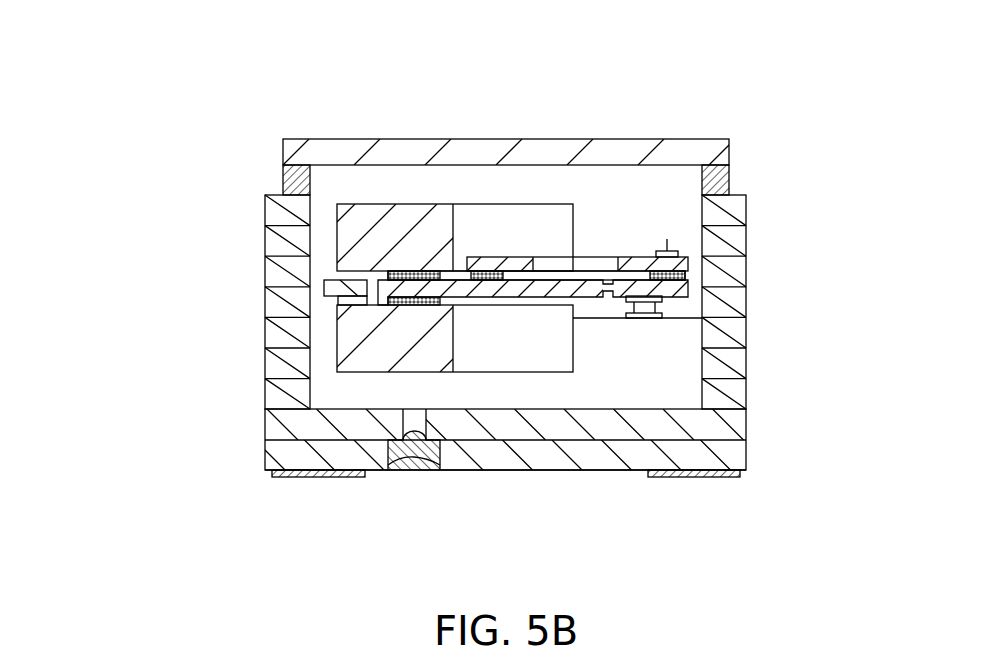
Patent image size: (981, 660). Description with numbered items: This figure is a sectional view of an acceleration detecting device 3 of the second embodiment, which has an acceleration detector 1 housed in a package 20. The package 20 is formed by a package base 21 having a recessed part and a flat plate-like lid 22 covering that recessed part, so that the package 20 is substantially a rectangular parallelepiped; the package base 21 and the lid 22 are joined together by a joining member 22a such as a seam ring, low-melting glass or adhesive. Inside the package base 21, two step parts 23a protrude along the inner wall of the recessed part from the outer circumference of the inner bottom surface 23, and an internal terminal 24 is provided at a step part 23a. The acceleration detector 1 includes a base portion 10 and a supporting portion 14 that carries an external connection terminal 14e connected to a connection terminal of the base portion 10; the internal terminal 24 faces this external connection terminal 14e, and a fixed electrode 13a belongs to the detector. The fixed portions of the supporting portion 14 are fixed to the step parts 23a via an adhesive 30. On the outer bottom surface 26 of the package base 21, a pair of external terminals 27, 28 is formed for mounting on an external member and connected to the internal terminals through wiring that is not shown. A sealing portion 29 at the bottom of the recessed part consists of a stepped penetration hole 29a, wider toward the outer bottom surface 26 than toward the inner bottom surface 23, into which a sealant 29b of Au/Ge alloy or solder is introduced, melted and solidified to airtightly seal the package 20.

The acceleration detecting device 3 is at (693, 118).
The acceleration detector 1 is at (528, 202).
The fixed electrode 13a is at (603, 256).
The base portion 10 is at (682, 285).
The supporting portion 14 is at (324, 287).
The adhesive 30 is at (338, 300).
The step part 23a is at (660, 300).
The external connection terminal 14e is at (664, 316).
The internal terminal 24 is at (650, 319).
The lid 22 is at (730, 148).
The seam ring 22a is at (730, 177).
The package base 21 is at (822, 195).
The package 20 is at (872, 140).
The inner bottom surface 23 is at (533, 406).
The outer bottom surface 26 is at (507, 472).
The external terminal 27 is at (330, 478).
The external terminal 28 is at (696, 478).
The sealing portion 29 is at (415, 459).
The stepped penetration hole 29a is at (391, 467).
The sealant 29b is at (423, 468).